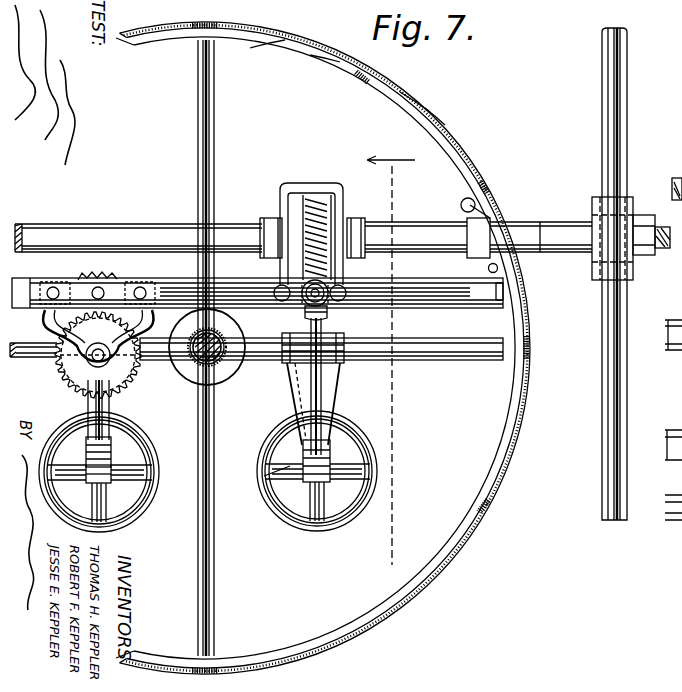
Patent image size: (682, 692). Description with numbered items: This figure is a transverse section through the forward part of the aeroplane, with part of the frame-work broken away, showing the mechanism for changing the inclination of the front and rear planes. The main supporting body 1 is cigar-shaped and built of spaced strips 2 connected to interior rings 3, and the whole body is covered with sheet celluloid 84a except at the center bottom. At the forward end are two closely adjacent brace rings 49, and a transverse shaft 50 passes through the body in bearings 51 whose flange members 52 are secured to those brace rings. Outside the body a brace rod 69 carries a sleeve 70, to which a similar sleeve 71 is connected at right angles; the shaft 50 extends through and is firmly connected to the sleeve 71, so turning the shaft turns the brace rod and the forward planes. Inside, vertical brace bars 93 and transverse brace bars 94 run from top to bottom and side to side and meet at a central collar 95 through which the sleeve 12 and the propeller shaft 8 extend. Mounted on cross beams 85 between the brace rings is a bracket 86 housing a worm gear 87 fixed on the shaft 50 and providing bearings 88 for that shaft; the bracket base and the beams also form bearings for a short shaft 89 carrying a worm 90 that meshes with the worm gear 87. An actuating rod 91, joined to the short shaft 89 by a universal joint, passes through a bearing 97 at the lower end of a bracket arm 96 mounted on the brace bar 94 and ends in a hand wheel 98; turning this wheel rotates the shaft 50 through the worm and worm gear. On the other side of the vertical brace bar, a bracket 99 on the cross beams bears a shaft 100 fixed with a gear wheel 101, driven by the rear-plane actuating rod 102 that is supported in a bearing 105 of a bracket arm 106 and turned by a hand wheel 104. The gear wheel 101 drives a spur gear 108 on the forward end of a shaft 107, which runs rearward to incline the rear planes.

The main supporting body 1 is at (291, 28).
The strips 2 is at (323, 61).
The rings 3 is at (267, 43).
The brace rings 49 is at (415, 101).
The sheet celluloid 84a is at (433, 115).
The brace rod 69 is at (628, 86).
The sleeve 70 is at (630, 198).
The sleeve 71 is at (646, 260).
The vertical brace bars 93 is at (210, 138).
The shaft 50 is at (143, 232).
The bearings 51 is at (538, 218).
The flange members 52 is at (462, 213).
The bearings 88 is at (263, 222).
The bracket 86 is at (312, 182).
The worm gear 87 is at (330, 212).
The cross beams 85 is at (460, 297).
The transverse brace bars 94 is at (446, 364).
The shaft 107 is at (105, 290).
The spur gear 108 is at (88, 280).
The bracket 99 is at (140, 318).
The shaft 100 is at (92, 358).
The gear wheel 101 is at (112, 385).
The actuating rod 102 is at (92, 407).
The bracket arm 106 is at (115, 447).
The bearing 105 is at (90, 465).
The hand wheel 104 is at (145, 496).
The collar 95 is at (222, 371).
The sleeves 12 is at (222, 336).
The shaft 8 is at (172, 371).
The worm 90 is at (307, 304).
The short shaft 89 is at (330, 314).
The actuating rod 91 is at (324, 376).
The bracket arm 96 is at (332, 402).
The hand wheel 98 is at (378, 478).
The bearing 97 is at (304, 480).